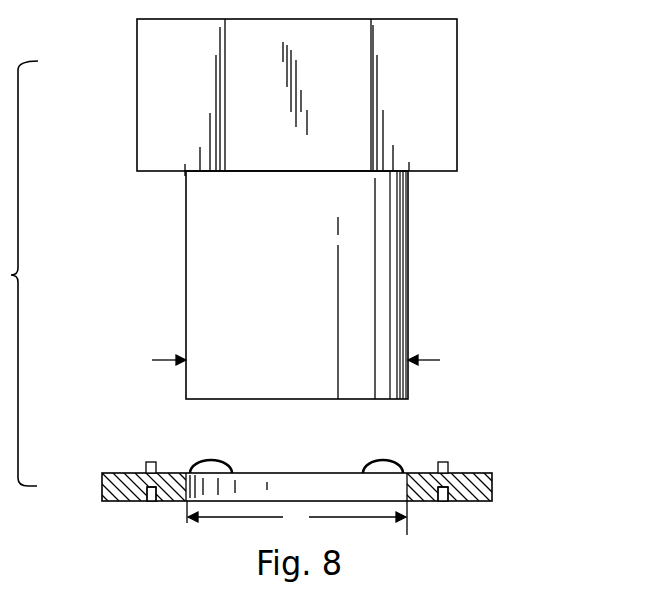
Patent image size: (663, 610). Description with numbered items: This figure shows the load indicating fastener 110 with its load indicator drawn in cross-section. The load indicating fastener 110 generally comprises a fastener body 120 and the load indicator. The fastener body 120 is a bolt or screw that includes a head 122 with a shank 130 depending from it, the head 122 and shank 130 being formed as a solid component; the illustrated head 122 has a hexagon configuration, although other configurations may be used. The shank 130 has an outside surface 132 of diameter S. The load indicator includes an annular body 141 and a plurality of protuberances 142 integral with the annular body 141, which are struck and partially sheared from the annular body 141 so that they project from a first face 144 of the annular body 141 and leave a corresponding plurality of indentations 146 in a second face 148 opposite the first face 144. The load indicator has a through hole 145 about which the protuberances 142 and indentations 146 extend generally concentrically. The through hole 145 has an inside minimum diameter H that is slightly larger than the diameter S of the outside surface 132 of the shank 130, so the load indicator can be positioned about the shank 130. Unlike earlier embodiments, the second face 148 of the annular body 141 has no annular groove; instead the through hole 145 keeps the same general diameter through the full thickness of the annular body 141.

The load indicating fastener 110 is at (523, 275).
The fastener body 120 is at (334, 97).
The head 122 is at (453, 98).
The shank 130 is at (330, 285).
The outside surface 132 is at (406, 302).
The annular body 141 is at (272, 479).
The protuberances 142 is at (149, 462).
The first face 144 is at (118, 473).
The through hole 145 is at (302, 489).
The indentations 146 is at (151, 502).
The second face 148 is at (118, 502).